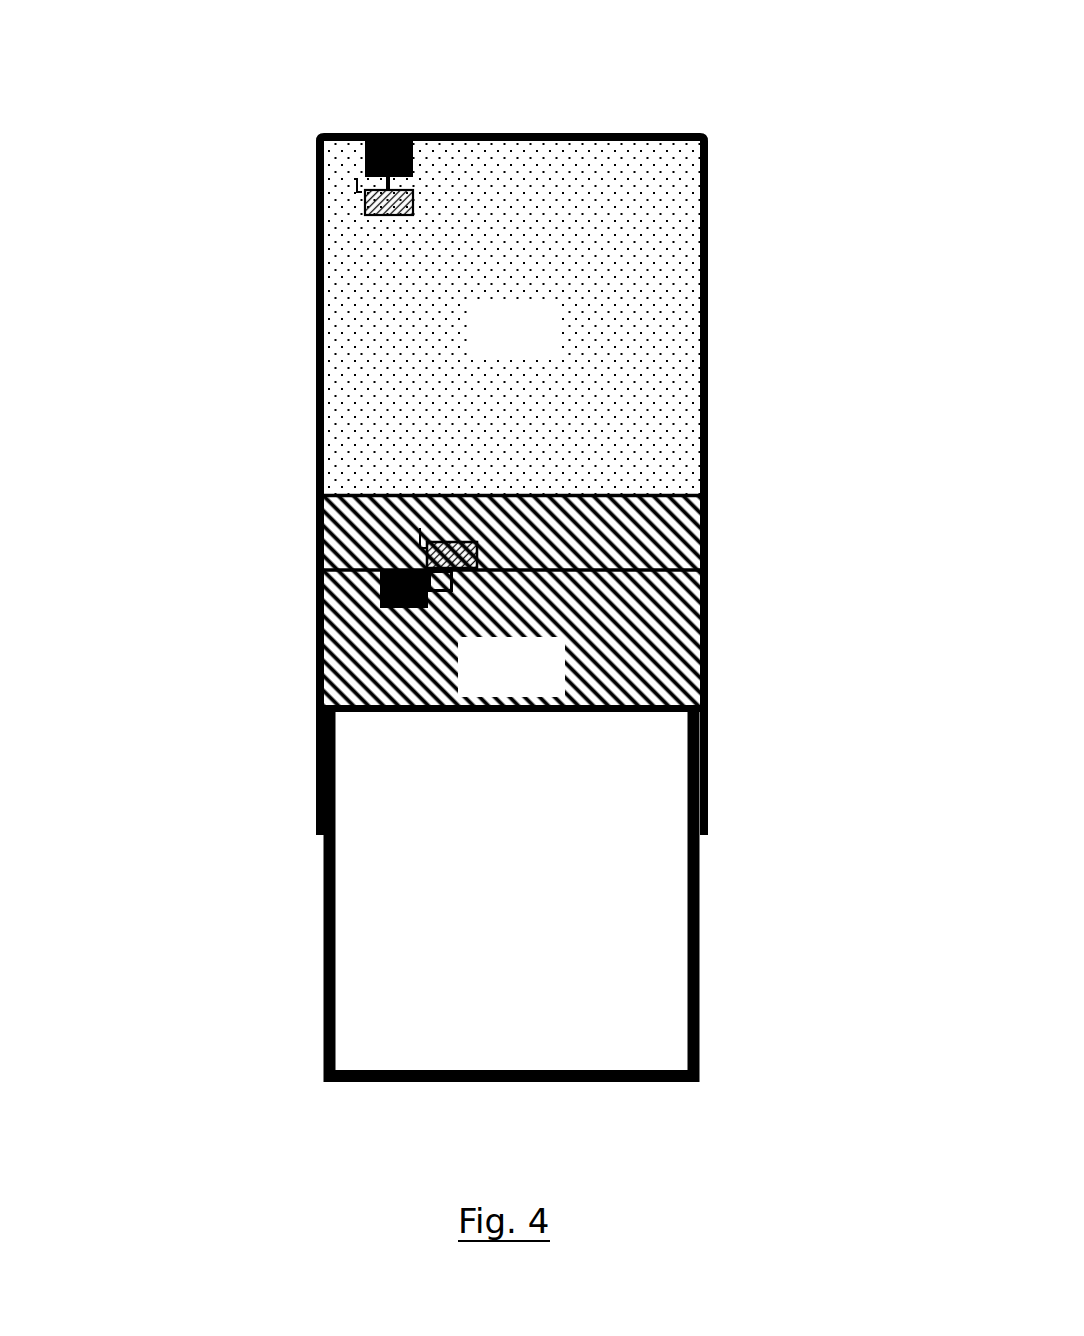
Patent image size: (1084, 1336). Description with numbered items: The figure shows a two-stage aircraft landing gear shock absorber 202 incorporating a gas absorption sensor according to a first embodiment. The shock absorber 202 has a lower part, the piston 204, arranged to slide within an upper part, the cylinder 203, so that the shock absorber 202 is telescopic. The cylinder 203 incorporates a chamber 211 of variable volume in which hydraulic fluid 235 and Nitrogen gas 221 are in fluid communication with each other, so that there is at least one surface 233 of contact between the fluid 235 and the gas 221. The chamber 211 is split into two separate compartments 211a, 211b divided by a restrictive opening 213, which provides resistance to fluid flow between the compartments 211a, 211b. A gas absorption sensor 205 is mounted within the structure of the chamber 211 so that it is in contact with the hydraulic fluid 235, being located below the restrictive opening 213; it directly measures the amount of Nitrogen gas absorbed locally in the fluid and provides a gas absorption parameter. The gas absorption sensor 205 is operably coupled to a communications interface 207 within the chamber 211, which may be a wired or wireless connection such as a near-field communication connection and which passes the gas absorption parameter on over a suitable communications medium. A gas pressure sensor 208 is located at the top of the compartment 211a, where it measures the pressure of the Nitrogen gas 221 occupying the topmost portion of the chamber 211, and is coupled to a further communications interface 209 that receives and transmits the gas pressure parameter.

The shock absorber 202 is at (228, 920).
The cylinder 203 is at (715, 125).
The piston 204 is at (549, 1002).
The gas absorption sensor 205 is at (378, 590).
The communications interface 207 is at (420, 545).
The gas pressure sensor 208 is at (387, 127).
The further communications interface 209 is at (358, 203).
The chamber 211 is at (539, 397).
The upper compartment 211a is at (455, 515).
The lower compartment 211b is at (436, 654).
The restrictive opening 213 is at (517, 570).
The Nitrogen gas 221 is at (547, 348).
The surface of contact 233 is at (508, 495).
The hydraulic fluid 235 is at (511, 667).